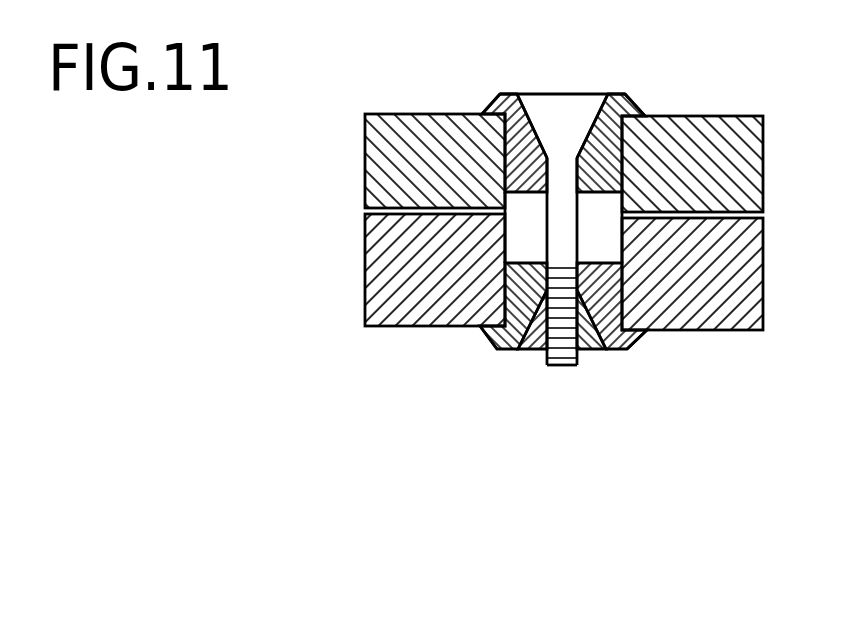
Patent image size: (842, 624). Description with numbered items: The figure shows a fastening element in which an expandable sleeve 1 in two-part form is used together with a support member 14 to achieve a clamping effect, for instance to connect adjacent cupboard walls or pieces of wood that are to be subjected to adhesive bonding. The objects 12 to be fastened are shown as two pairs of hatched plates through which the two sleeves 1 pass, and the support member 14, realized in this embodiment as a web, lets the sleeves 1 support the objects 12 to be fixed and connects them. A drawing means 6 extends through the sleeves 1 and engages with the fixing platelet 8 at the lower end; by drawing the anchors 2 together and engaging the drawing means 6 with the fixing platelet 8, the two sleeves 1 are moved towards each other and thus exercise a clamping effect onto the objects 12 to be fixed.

The sleeve 1 is at (630, 97).
The anchor 2 is at (560, 107).
The drawing means 6 is at (563, 323).
The fixing platelet 8 is at (587, 350).
The objects to be fastened 12 is at (388, 165).
The support member 14 is at (490, 96).